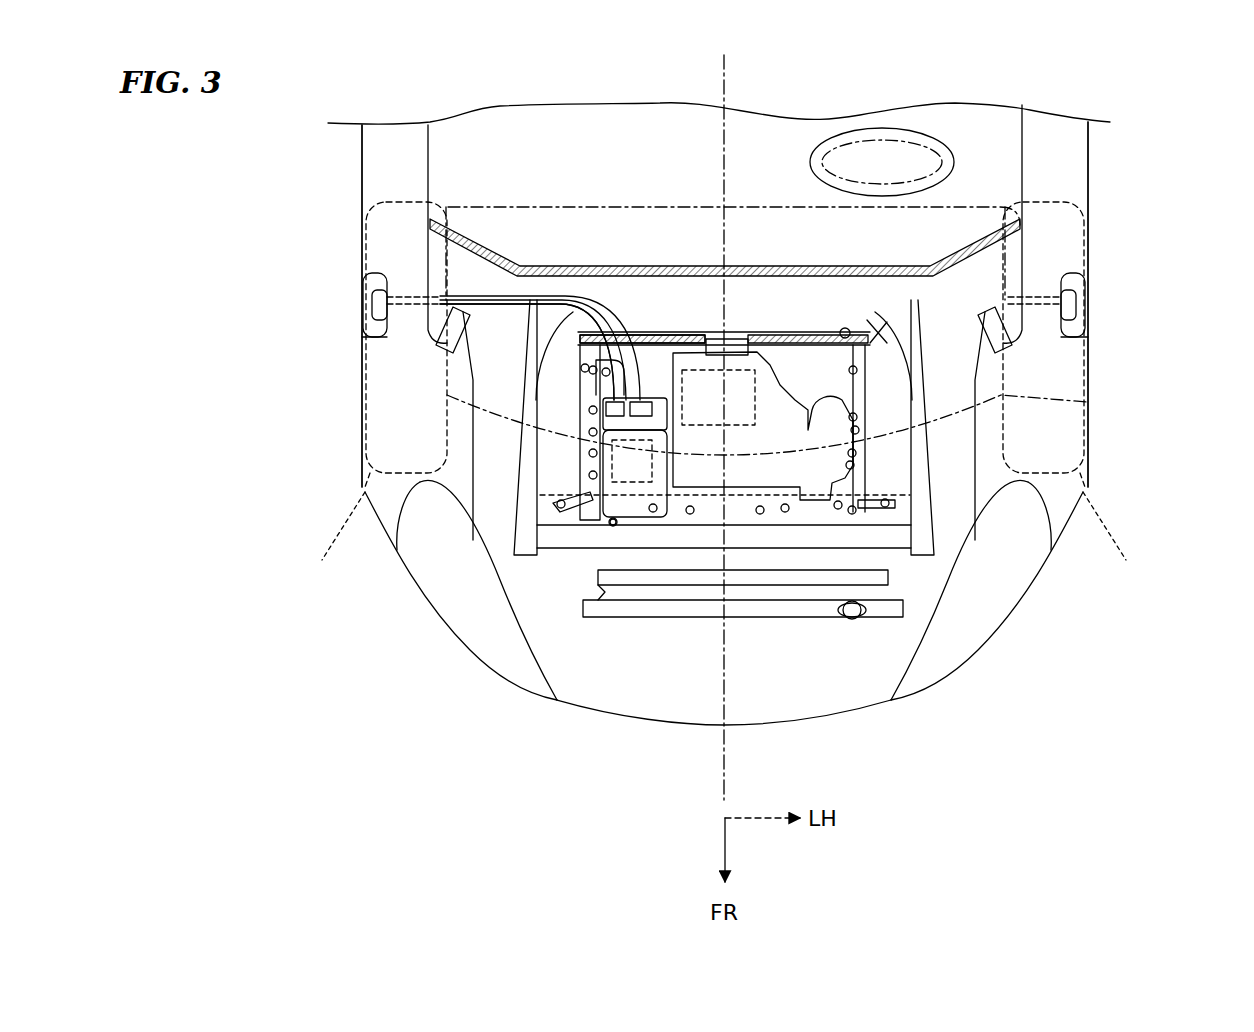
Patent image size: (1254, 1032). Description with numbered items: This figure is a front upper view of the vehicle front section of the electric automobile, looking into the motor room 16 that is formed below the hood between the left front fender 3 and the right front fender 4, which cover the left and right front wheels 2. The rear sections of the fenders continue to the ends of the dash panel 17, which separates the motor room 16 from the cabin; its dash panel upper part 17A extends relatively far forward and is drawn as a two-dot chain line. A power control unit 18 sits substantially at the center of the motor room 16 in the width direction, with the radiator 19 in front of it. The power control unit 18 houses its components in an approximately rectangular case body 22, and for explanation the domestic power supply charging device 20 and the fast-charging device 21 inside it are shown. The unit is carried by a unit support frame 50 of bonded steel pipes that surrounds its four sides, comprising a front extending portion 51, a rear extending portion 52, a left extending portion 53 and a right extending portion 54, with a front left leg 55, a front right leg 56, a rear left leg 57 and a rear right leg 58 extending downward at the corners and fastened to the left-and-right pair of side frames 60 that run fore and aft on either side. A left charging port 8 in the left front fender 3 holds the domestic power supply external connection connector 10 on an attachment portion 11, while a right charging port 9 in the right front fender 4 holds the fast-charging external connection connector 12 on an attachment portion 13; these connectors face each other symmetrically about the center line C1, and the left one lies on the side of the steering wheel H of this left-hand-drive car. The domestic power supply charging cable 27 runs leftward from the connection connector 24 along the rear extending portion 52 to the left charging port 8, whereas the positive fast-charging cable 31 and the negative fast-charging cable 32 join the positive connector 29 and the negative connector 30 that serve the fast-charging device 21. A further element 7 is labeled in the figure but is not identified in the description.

The front wheels 2 is at (721, 538).
The left front fender 3 is at (1088, 355).
The right front fender 4 is at (362, 355).
The hull bottom 7 is at (450, 615).
The left charging port 8 is at (1083, 285).
The right charging port 9 is at (365, 285).
The domestic power supply external connection connector 10 is at (1063, 298).
The attachment portion 11 is at (1085, 338).
The fast-charging external connection connector 12 is at (385, 298).
The attachment portion 13 is at (365, 338).
The motor room 16 is at (970, 387).
The dash panel 17 is at (748, 262).
The dash panel upper part 17A is at (1088, 402).
The power control unit 18 is at (617, 517).
The radiator 19 is at (668, 617).
The domestic power supply charging device 20 is at (740, 430).
The fast-charging device 21 is at (630, 487).
The case body 22 is at (720, 527).
The connection connector 24 is at (740, 348).
The domestic power supply charging cable 27 is at (968, 330).
The positive connector 29 is at (607, 413).
The negative connector 30 is at (667, 345).
The positive fast-charging cable 31 is at (473, 296).
The negative fast-charging cable 32 is at (527, 352).
The unit support frame 50 is at (852, 508).
The front extending portion 51 is at (837, 505).
The rear extending portion 52 is at (783, 335).
The left extending portion 53 is at (857, 463).
The right extending portion 54 is at (605, 450).
The front left leg 55 is at (867, 508).
The front right leg 56 is at (573, 505).
The rear left leg 57 is at (845, 330).
The rear right leg 58 is at (572, 368).
The side frames 60 is at (520, 503).
The center line C1 is at (720, 78).
The steering wheel H is at (893, 130).